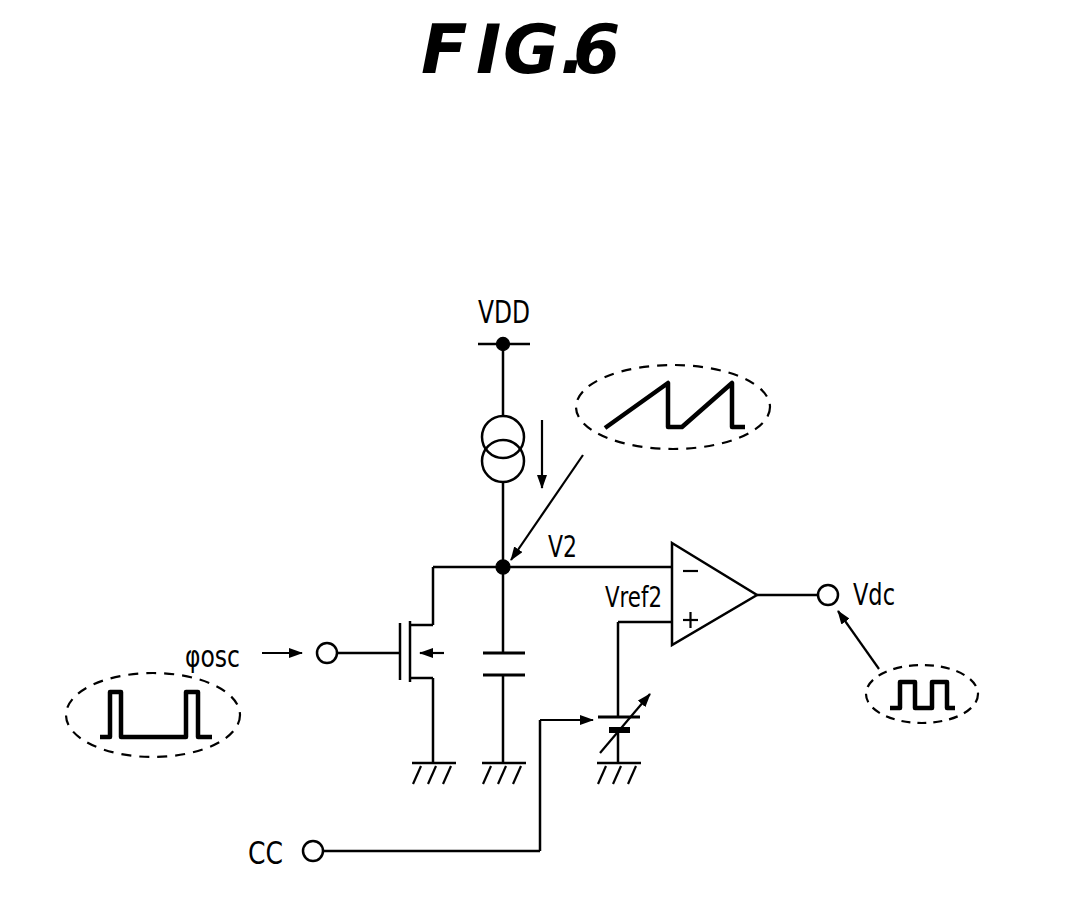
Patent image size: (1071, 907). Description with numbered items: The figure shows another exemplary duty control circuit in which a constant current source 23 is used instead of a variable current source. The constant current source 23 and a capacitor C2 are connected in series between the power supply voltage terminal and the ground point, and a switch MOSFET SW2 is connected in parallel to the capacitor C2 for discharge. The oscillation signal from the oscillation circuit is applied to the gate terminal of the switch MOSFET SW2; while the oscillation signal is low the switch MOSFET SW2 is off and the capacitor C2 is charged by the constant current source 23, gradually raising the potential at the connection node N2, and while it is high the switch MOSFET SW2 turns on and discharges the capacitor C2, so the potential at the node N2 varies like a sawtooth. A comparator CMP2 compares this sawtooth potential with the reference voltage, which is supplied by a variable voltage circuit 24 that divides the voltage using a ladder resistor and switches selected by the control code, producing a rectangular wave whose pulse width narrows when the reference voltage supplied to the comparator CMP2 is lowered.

The constant current source 23 is at (465, 422).
The variable voltage circuit 24 is at (647, 727).
The connection node N2 is at (497, 560).
The switch MOSFET SW2 is at (390, 669).
The capacitor C2 is at (526, 668).
The comparator CMP2 is at (715, 568).